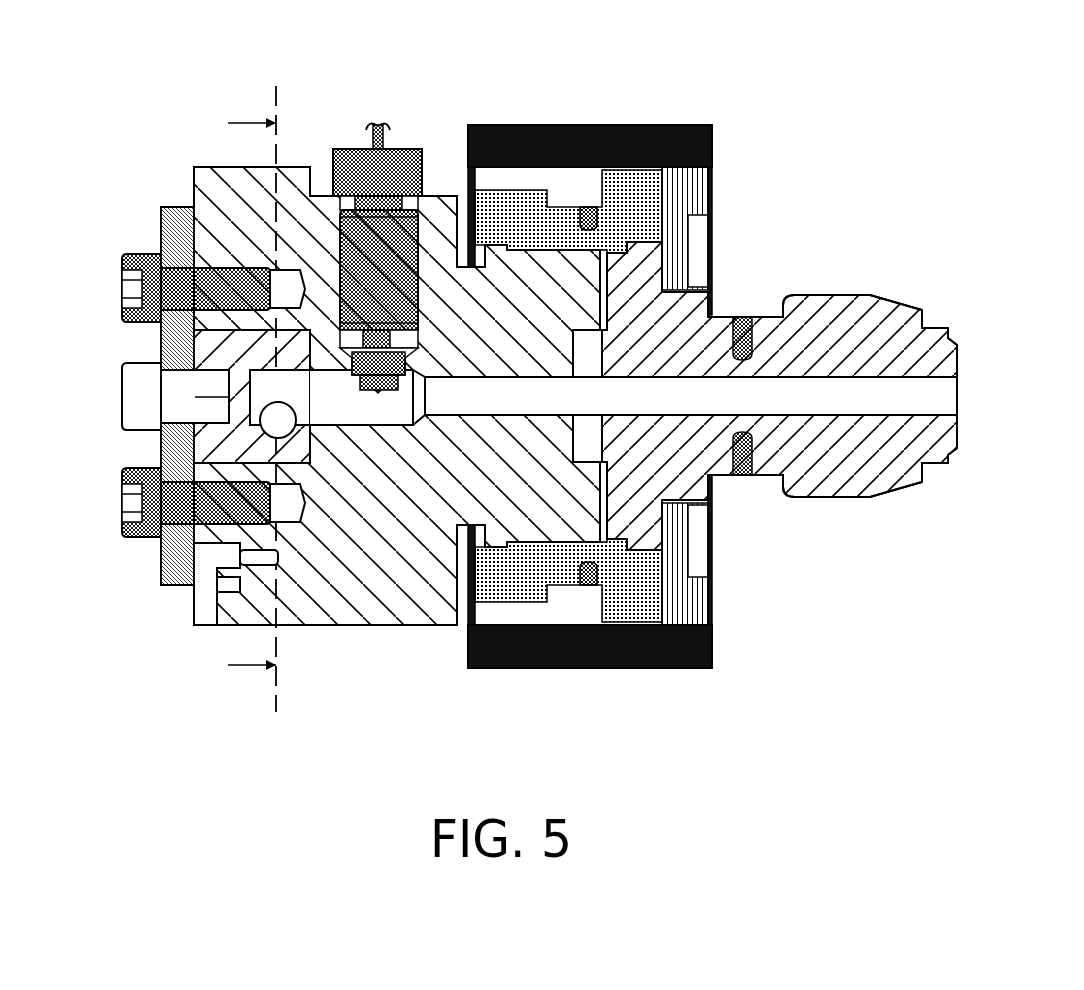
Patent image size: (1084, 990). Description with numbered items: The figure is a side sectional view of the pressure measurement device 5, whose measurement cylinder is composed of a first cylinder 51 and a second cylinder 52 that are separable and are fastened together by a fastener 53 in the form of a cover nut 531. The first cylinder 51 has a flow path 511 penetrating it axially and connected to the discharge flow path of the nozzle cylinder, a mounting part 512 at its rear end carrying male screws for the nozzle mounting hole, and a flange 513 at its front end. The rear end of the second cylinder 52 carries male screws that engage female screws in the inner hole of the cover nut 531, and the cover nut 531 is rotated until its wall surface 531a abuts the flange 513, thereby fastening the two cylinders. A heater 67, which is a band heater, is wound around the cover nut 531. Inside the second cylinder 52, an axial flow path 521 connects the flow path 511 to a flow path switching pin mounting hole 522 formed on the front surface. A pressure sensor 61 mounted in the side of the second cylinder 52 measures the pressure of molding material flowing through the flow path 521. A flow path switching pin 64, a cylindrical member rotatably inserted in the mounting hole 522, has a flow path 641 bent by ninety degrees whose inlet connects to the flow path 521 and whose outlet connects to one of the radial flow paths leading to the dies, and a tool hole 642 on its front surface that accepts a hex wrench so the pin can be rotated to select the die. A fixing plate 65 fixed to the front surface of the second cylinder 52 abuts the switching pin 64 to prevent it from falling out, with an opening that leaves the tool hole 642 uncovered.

The pressure measurement device 5 is at (130, 128).
The first cylinder 51 is at (835, 535).
The flow path 511 is at (753, 409).
The mounting part 512 is at (823, 295).
The flange 513 is at (645, 522).
The second cylinder 52 is at (418, 652).
The flow path 521 is at (481, 409).
The flow path switching pin mounting hole 522 is at (313, 447).
The fastener 53 is at (666, 372).
The cover nut 531 is at (725, 205).
The wall surface 531a is at (673, 262).
The pressure sensor 61 is at (400, 153).
The flow path switching pin 64 is at (213, 348).
The flow path 641 is at (297, 395).
The tool hole 642 is at (225, 408).
The fixing plate 65 is at (167, 576).
The heater 67 is at (692, 660).